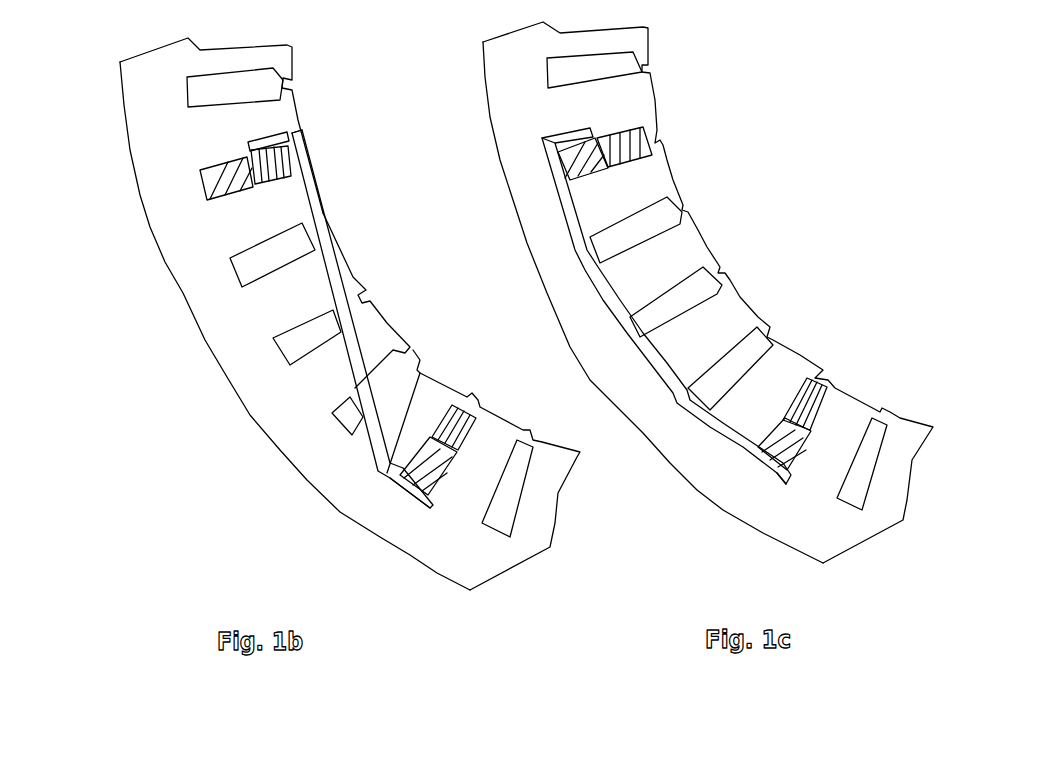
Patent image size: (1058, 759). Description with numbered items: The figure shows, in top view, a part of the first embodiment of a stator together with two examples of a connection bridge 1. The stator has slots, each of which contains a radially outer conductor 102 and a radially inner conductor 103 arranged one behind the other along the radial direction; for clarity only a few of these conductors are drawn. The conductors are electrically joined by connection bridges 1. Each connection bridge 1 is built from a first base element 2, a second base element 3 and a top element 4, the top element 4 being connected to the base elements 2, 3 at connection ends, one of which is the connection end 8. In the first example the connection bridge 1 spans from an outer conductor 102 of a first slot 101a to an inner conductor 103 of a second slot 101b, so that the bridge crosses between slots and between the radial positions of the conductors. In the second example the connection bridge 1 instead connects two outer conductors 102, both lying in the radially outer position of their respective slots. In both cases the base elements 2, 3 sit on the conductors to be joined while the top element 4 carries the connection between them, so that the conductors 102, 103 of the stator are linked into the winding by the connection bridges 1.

In FIG. 1B, the connection bridge 1 is at (331, 233).
In FIG. 1C, the connection bridge 1 is at (616, 318).
In FIG. 1B, the first base element 2 is at (443, 480).
In FIG. 1C, the first base element 2 is at (810, 447).
In FIG. 1B, the second base element 3 is at (263, 143).
In FIG. 1C, the second base element 3 is at (577, 132).
In FIG. 1B, the top element 4 is at (338, 312).
In FIG. 1B, the connection end 8 is at (306, 137).
In FIG. 1B, the first slot 101a is at (513, 377).
In FIG. 1B, the second slot 101b is at (315, 153).
In FIG. 1C, the second slot 101b is at (708, 292).
In FIG. 1B, the radially outer conductor 102 is at (245, 165).
In FIG. 1C, the radially outer conductor 102 is at (587, 155).
In FIG. 1B, the radially inner conductor 103 is at (262, 165).
In FIG. 1C, the radially inner conductor 103 is at (622, 142).